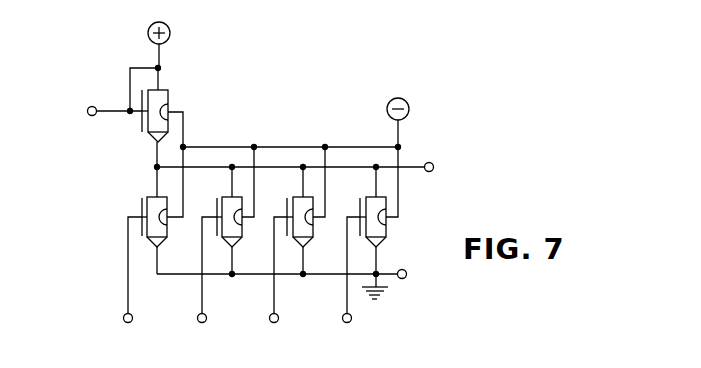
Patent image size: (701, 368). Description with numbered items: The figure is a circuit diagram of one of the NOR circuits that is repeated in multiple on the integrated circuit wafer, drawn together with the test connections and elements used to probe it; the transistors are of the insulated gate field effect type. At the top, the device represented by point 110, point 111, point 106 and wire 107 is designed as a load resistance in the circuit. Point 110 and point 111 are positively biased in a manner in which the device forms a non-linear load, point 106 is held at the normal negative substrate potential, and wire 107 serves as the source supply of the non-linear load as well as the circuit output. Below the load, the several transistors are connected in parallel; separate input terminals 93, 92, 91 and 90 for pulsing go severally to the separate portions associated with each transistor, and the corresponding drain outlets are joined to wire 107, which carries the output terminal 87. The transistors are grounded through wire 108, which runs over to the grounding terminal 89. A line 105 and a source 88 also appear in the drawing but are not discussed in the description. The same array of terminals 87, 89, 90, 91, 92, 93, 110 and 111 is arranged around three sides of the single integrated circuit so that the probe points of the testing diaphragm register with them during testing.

The point 110 is at (148, 36).
The point 111LG 111 is at (88, 111).
The point 106 is at (186, 126).
The common drain line 105 is at (228, 146).
The substrate bias voltage source V_SUB 88 is at (387, 104).
The wire 107 is at (412, 166).
The output terminal 87 is at (432, 171).
The wire 108 is at (212, 276).
The grounding terminal 89 is at (405, 271).
The input terminal 93 is at (131, 321).
The input terminal 92 is at (205, 321).
The input terminal 91 is at (277, 321).
The input terminal 90 is at (350, 321).